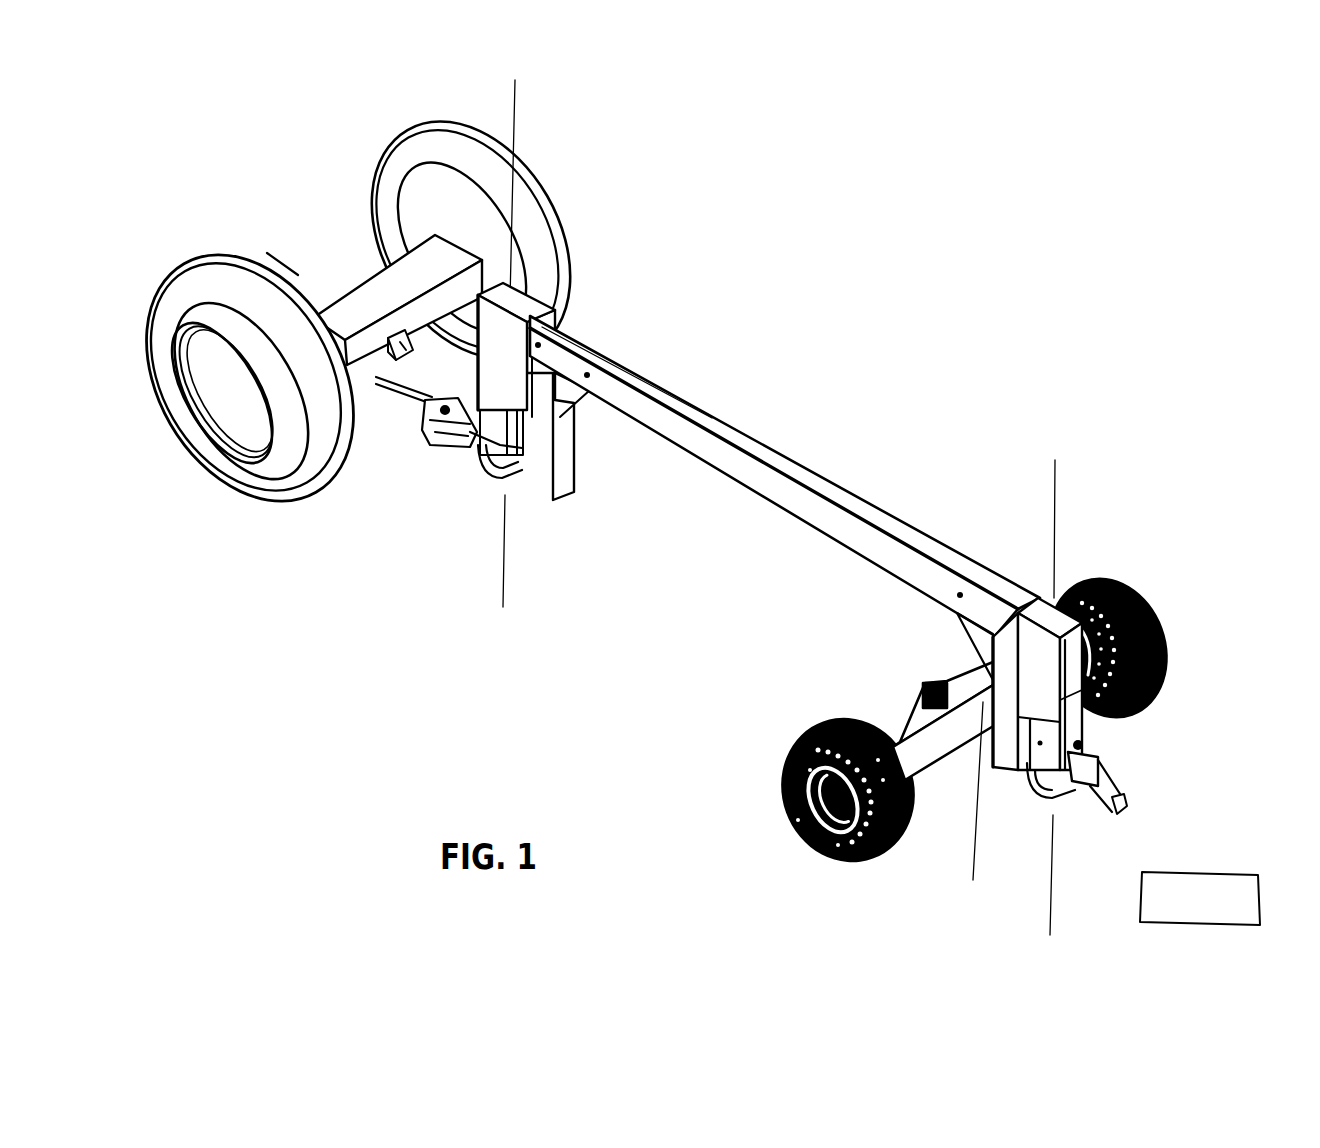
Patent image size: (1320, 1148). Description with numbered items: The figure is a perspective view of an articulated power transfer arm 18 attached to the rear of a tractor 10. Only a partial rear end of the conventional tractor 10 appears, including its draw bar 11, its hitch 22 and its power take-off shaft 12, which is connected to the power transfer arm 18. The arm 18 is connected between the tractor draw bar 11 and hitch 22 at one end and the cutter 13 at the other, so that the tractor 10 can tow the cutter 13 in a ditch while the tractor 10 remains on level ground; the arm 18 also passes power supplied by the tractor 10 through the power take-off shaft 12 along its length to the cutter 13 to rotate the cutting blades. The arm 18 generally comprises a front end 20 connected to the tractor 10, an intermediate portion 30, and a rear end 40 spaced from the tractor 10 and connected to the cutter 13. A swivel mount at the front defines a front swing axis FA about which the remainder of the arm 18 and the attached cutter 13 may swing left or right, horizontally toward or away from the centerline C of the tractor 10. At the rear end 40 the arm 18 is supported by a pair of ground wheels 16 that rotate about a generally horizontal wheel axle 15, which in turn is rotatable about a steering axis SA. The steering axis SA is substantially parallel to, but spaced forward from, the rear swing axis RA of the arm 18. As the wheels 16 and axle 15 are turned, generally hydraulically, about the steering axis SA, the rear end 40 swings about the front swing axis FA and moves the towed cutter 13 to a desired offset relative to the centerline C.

The tractor 10 is at (556, 191).
The draw bar 11 is at (410, 395).
The power take-off shaft 12 is at (413, 330).
The cutter 13 is at (1120, 807).
The wheel axle 15 is at (912, 727).
The ground wheels 16 is at (1160, 672).
The articulated power transfer arm 18 is at (764, 378).
The front end 20 is at (584, 310).
The hitch 22 is at (448, 447).
The intermediate portion 30 is at (805, 452).
The rear end 40 is at (975, 657).
The centerline C is at (248, 240).
The front swing axis FA is at (517, 112).
The rear swing axis RA is at (1057, 505).
The steering axis SA is at (972, 848).